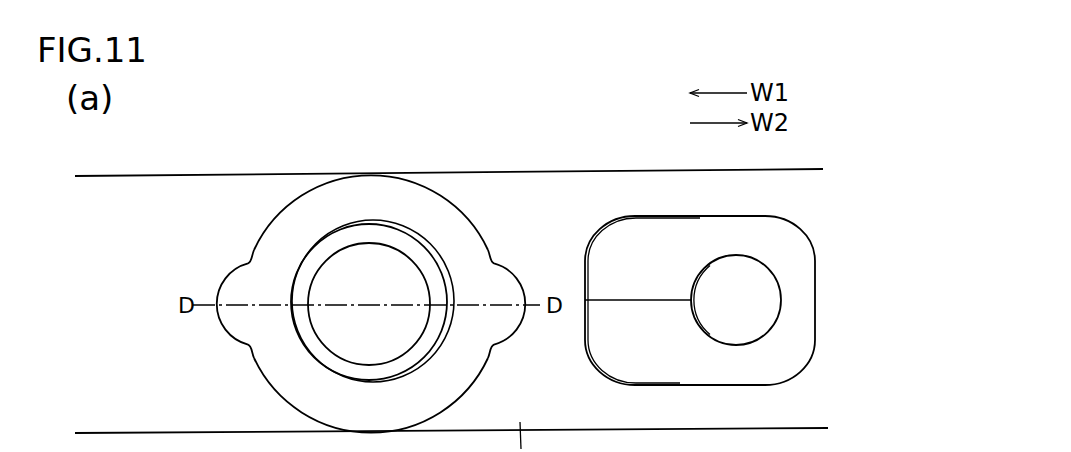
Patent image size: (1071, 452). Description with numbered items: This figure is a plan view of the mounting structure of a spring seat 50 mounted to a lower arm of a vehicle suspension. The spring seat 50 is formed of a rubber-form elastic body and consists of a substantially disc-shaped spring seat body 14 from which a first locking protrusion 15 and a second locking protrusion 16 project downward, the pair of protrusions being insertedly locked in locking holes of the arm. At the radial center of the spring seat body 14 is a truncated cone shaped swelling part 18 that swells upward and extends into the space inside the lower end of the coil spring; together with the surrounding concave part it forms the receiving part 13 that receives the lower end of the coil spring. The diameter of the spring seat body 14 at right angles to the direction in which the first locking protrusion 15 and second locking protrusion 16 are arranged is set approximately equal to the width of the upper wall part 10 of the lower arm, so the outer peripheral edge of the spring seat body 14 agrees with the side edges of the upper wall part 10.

The spring seat 50 is at (240, 192).
The upper wall part 10 is at (284, 188).
The spring seat body 14 is at (250, 366).
The first locking protrusion 15 is at (512, 280).
The second locking protrusion 16 is at (227, 298).
The swelling part 18 is at (391, 234).
The receiving part 13 is at (373, 301).